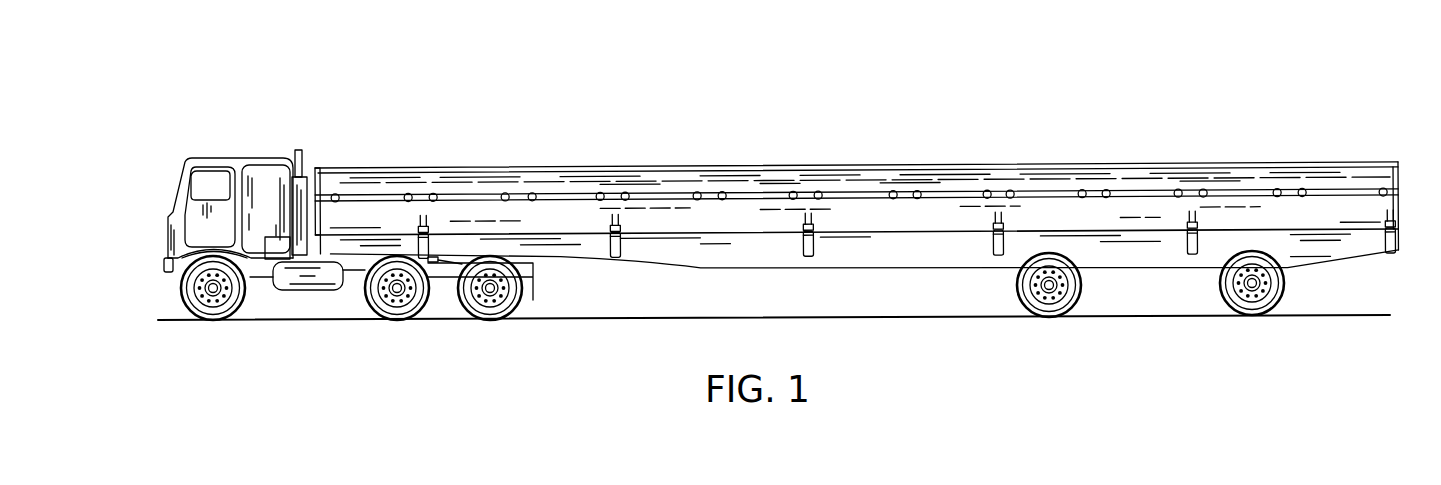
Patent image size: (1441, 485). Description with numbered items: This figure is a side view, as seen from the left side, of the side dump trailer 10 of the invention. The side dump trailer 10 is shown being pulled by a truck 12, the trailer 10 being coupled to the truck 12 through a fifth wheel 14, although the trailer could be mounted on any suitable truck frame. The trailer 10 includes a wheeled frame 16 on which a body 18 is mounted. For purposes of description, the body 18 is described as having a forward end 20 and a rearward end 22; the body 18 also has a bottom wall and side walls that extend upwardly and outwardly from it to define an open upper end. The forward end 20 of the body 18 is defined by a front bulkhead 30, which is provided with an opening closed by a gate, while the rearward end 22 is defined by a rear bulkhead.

The side dump trailer 10 is at (703, 134).
The truck 12 is at (230, 142).
The fifth wheel 14 is at (437, 263).
The wheeled frame 16 is at (990, 287).
The body 18 is at (852, 150).
The forward end 20 is at (310, 162).
The rearward end 22 is at (1412, 185).
The front bulkhead 30 is at (317, 170).